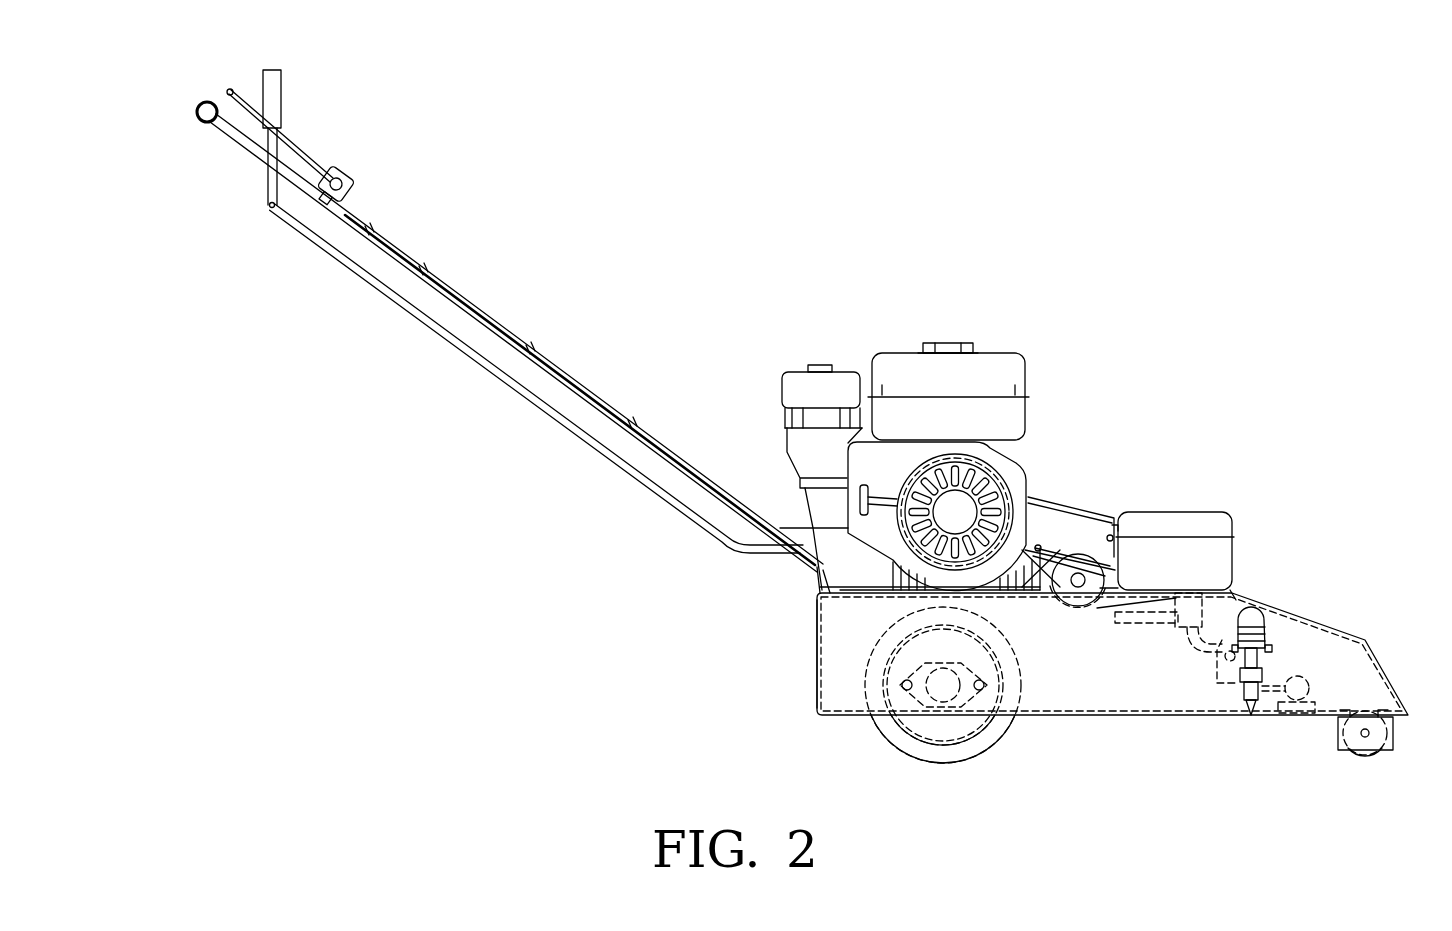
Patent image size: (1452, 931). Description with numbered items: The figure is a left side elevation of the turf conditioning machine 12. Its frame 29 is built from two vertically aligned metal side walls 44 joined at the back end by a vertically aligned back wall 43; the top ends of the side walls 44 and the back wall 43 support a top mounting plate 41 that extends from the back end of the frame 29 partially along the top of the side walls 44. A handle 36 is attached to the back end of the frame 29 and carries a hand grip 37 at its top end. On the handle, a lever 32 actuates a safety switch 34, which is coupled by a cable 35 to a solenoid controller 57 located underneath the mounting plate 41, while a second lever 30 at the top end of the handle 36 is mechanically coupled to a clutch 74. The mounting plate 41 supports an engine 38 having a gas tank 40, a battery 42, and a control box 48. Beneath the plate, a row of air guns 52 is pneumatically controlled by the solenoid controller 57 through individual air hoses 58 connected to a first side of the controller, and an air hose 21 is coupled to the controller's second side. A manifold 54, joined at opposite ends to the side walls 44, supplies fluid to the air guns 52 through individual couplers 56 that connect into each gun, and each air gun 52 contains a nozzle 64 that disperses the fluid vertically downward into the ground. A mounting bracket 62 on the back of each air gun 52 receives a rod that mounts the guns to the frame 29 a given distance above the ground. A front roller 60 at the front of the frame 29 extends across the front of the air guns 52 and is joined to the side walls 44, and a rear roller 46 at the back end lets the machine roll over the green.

The machine 12 is at (1122, 376).
The air hose 21 is at (1125, 624).
The frame 29 is at (678, 659).
The lever 30 is at (282, 85).
The lever 32 is at (302, 152).
The safety switch 34 is at (352, 187).
The cable 35 is at (490, 315).
The handle 36 is at (613, 405).
The hand grip 37 is at (197, 118).
The engine 38 is at (790, 370).
The gas tank 40 is at (1017, 352).
The top mounting plate 41 is at (816, 584).
The battery 42 is at (797, 487).
The back wall 43 is at (815, 622).
The side walls 44 is at (835, 672).
The rear roller 46 is at (890, 740).
The control box 48 is at (1180, 511).
The air guns 52 is at (1262, 641).
The manifold 54 is at (1310, 686).
The couplers 56 is at (1272, 686).
The solenoid controller 57 is at (1175, 630).
The air hoses 58 is at (1200, 650).
The front roller 60 is at (1363, 756).
The mounting bracket 62 is at (1232, 686).
The nozzle 64 is at (1248, 720).
The clutch 74 is at (1075, 556).